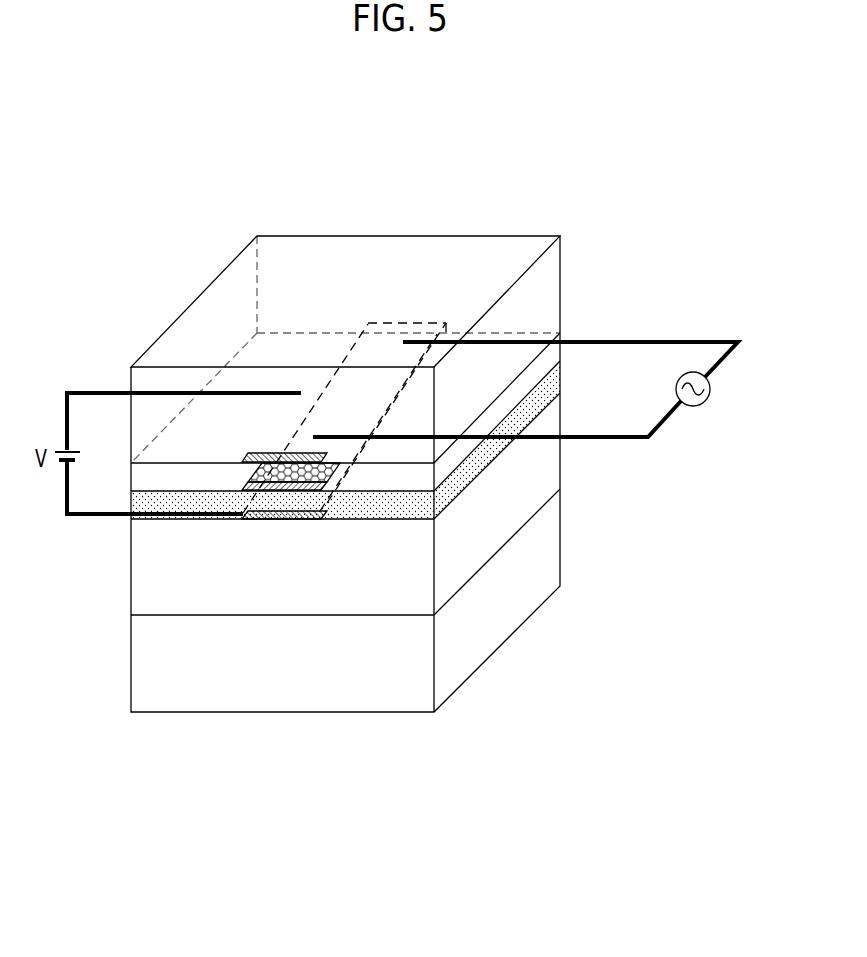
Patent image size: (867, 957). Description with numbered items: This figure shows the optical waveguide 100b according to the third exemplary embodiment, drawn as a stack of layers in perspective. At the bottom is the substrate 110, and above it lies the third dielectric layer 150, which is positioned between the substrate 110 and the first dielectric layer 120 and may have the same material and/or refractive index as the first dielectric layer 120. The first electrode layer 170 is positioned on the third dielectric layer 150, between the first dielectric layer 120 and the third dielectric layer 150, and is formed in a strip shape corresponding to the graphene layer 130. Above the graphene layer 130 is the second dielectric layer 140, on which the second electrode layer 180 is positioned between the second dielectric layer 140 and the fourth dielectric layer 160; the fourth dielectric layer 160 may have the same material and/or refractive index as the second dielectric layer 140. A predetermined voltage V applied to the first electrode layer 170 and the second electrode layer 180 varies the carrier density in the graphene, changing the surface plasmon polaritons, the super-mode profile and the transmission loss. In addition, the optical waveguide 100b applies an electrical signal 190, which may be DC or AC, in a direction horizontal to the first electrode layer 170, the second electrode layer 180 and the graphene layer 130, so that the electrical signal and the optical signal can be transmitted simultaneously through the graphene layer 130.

The optical waveguide 100b is at (382, 450).
The substrate 110 is at (542, 547).
The first dielectric layer 120 is at (553, 380).
The graphene layer 130 is at (303, 487).
The second dielectric layer 140 is at (553, 352).
The third dielectric layer 150 is at (542, 463).
The fourth dielectric layer 160 is at (542, 293).
The first electrode layer 170 is at (260, 519).
The second electrode layer 180 is at (383, 337).
The electrical signal 190 is at (710, 389).